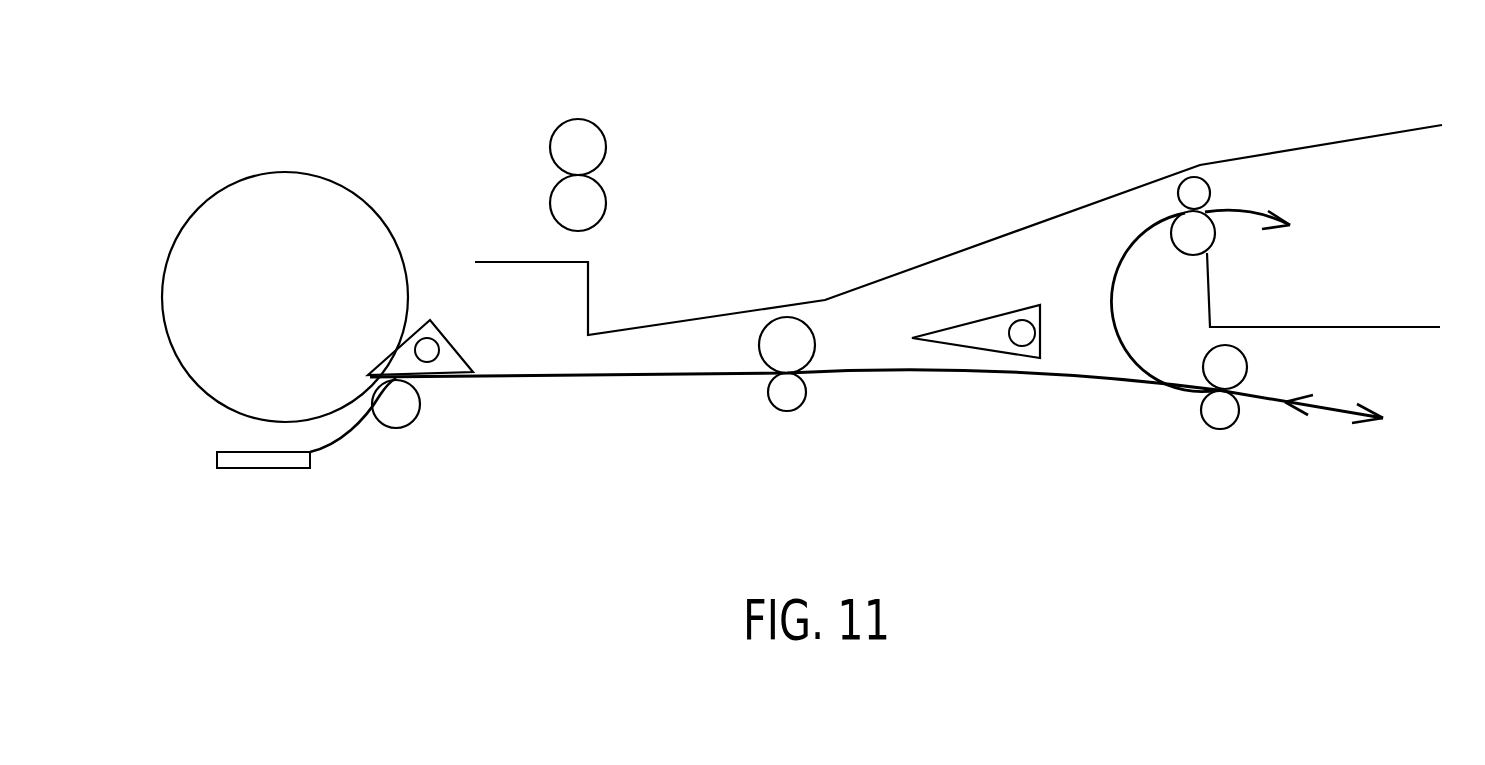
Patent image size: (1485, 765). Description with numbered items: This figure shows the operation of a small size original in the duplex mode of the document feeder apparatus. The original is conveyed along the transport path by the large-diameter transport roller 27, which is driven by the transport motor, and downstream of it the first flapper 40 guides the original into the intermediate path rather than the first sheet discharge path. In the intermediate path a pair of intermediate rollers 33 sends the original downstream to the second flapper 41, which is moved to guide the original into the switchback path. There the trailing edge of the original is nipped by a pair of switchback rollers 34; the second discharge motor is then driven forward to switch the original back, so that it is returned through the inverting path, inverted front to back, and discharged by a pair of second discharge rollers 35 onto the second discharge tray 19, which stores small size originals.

The transport roller 27 is at (262, 188).
The first flapper 40 is at (462, 357).
The pair of intermediate rollers 33 is at (775, 335).
The second flapper 41 is at (978, 330).
The pair of second discharge rollers 35 is at (1190, 187).
The second discharge tray 19 is at (1357, 325).
The pair of switchback rollers 34 is at (1215, 413).